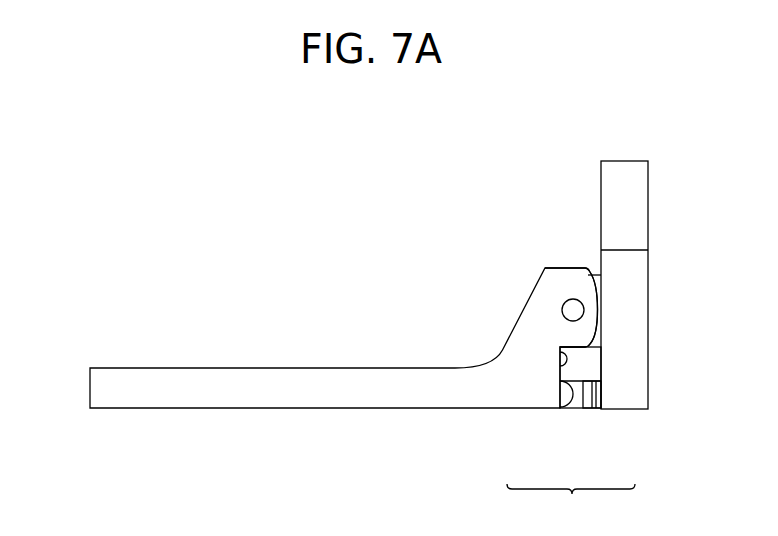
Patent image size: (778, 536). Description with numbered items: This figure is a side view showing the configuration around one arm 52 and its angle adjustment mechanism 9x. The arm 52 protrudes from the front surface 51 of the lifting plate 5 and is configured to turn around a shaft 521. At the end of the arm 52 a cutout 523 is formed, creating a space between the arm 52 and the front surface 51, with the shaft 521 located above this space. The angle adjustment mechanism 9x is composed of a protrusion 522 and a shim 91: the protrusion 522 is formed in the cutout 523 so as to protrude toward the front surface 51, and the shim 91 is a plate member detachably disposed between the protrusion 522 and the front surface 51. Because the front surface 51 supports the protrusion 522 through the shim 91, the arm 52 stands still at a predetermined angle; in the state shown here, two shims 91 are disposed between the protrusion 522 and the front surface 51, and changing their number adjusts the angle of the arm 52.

The lifting plate 5 is at (625, 160).
The front surface 51 is at (600, 184).
The arm 52 is at (390, 367).
The shaft 521 is at (570, 297).
The protrusion 522 is at (566, 409).
The cutout 523 is at (561, 350).
The shim 91 is at (588, 409).
The angle adjustment mechanism 9x is at (571, 503).